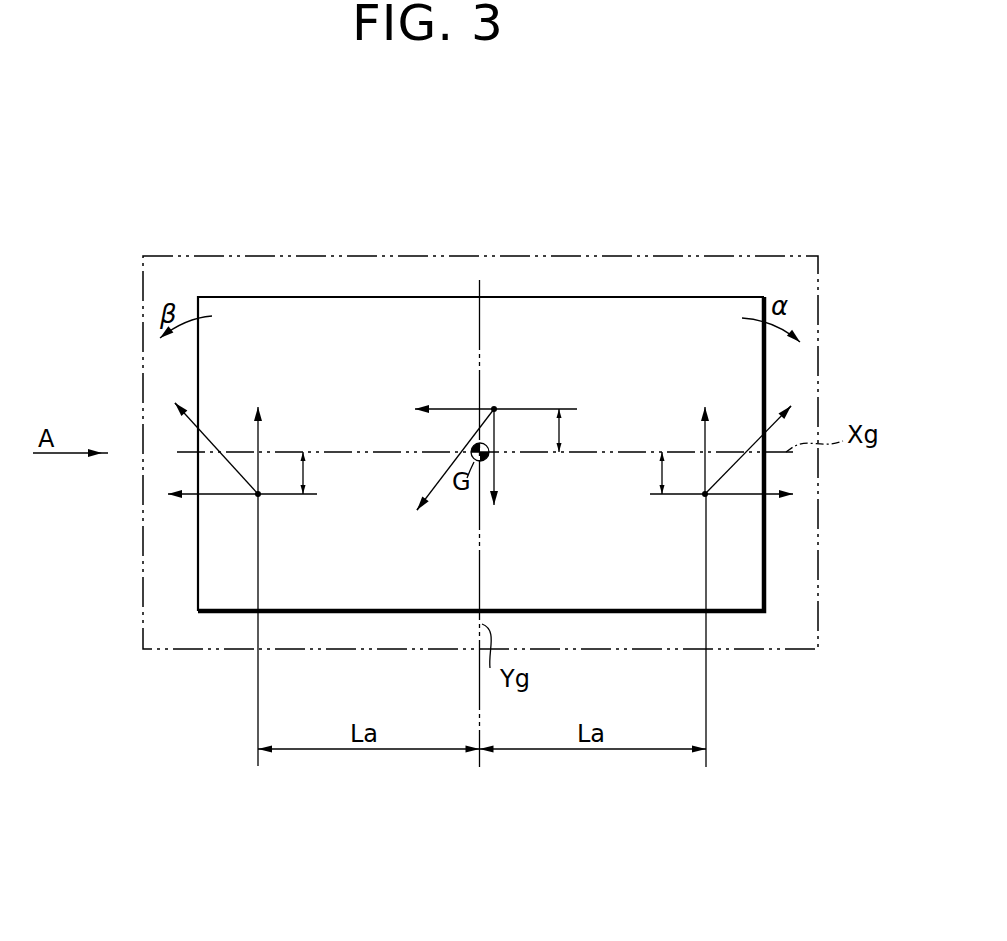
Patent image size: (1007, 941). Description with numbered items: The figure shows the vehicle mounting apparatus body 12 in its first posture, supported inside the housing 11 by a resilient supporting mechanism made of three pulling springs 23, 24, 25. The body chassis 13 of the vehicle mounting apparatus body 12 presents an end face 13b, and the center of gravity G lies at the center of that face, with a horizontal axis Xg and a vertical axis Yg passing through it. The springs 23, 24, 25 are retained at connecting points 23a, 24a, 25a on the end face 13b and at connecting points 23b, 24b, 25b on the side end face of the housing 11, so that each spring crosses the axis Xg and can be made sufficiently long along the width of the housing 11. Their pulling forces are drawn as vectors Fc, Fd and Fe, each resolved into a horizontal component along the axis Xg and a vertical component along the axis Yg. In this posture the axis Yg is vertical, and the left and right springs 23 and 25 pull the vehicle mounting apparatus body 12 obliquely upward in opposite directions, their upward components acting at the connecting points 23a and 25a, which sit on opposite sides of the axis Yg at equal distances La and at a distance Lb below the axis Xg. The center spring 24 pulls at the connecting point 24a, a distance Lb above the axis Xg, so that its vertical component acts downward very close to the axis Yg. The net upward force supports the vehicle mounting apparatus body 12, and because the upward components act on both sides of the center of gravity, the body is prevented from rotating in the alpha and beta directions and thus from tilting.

The housing 11 is at (297, 256).
The vehicle mounting apparatus body 12 is at (430, 296).
The body chassis 13 is at (557, 308).
The end face of the body chassis 13b is at (680, 310).
The pulling spring 23 is at (232, 466).
The connecting point 23a is at (258, 494).
The connecting point 23b is at (175, 403).
The pulling spring 24 is at (443, 482).
The connecting point 24a is at (494, 409).
The connecting point 24b is at (417, 512).
The pulling spring 25 is at (735, 467).
The connecting point 25a is at (705, 494).
The connecting point 25b is at (791, 406).